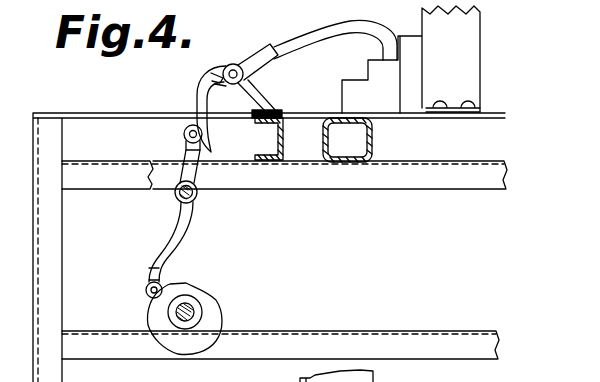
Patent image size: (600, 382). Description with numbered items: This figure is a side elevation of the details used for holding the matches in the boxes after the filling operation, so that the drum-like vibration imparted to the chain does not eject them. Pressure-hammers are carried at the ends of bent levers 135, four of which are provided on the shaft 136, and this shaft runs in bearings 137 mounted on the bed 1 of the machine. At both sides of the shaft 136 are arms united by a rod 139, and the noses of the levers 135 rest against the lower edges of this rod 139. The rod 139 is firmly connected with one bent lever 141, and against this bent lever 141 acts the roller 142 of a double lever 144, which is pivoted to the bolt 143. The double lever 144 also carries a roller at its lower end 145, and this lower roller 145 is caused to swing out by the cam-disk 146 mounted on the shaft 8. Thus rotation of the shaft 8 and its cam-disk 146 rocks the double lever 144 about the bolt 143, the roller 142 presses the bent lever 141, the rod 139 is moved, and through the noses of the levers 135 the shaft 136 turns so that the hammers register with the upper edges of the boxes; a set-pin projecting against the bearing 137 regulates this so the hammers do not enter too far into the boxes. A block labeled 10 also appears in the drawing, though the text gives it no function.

The bed 1 is at (45, 300).
The shaft 8 is at (196, 308).
The guide block 10 is at (411, 59).
The bent lever 135 is at (339, 28).
The shaft 136 is at (234, 68).
The bearing 137 is at (256, 96).
The rod 139 is at (218, 74).
The bent lever 141 is at (197, 97).
The roller 142 is at (184, 134).
The bolt 143 is at (177, 198).
The double lever 144 is at (178, 235).
The roller at lower end 145 is at (146, 291).
The cam-disk 146 is at (183, 347).